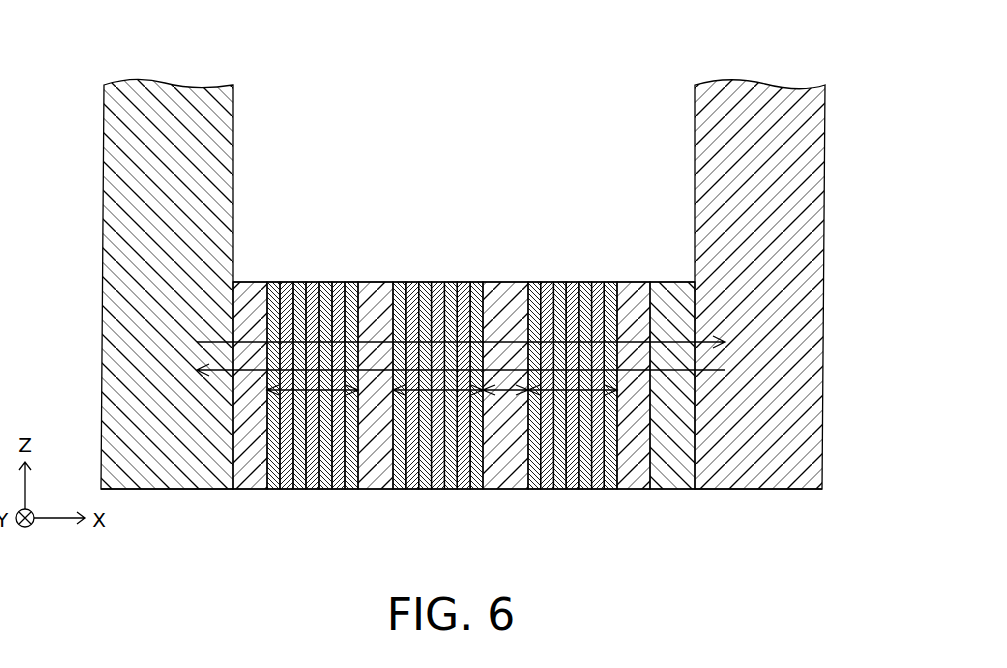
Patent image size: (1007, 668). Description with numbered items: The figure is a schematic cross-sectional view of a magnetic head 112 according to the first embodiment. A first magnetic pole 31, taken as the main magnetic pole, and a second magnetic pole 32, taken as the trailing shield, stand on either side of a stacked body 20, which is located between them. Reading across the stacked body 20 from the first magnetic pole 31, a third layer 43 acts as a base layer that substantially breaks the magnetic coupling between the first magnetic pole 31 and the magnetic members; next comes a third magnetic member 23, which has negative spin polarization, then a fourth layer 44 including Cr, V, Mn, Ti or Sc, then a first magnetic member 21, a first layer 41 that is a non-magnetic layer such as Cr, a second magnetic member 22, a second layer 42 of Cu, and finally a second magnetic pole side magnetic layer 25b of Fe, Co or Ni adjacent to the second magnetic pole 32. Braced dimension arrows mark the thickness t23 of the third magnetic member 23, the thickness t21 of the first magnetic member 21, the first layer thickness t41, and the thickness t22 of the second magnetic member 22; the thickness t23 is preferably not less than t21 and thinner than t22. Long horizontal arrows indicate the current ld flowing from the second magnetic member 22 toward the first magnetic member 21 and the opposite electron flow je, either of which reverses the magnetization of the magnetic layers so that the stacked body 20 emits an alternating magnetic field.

The magnetic head 112 is at (860, 108).
The first magnetic pole 31 is at (133, 251).
The second magnetic pole 32 is at (790, 268).
The stacked body 20 is at (238, 228).
The first magnetic member 21 is at (393, 276).
The second magnetic member 22 is at (528, 276).
The third magnetic member 23 is at (268, 276).
The first layer 41 is at (503, 300).
The second layer 42 is at (630, 298).
The third layer 43 is at (252, 297).
The fourth layer 44 is at (375, 298).
The second magnetic pole side magnetic layer 25b is at (673, 300).
The thickness of third magnetic member t23 is at (312, 398).
The thickness of first magnetic member t21 is at (436, 398).
The first layer thickness t41 is at (500, 398).
The thickness of second magnetic member t22 is at (571, 398).
The current ld is at (656, 374).
The electron flow je is at (677, 348).